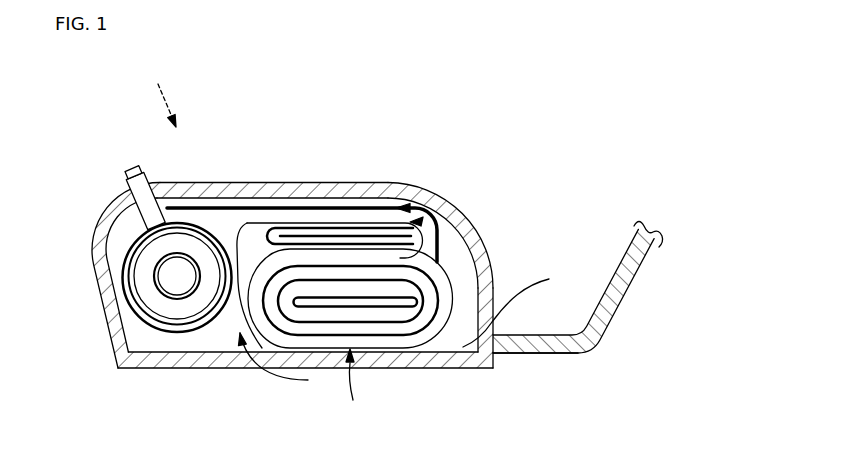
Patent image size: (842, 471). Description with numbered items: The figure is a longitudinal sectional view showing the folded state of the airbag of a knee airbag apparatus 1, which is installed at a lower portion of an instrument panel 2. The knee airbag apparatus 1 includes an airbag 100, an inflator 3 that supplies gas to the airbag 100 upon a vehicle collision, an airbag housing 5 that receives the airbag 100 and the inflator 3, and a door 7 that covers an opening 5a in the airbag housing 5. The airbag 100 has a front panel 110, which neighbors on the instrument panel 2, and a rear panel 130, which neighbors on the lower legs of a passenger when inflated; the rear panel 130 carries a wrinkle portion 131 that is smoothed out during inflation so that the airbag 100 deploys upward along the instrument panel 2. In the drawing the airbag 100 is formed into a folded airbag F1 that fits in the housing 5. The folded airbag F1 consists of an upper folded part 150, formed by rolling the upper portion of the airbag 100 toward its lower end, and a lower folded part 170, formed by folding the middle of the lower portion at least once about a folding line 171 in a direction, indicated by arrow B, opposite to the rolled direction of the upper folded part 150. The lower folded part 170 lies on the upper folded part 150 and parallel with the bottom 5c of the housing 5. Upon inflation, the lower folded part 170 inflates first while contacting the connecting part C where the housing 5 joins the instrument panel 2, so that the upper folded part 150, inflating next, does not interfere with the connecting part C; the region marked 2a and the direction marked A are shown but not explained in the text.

The knee airbag apparatus 1 is at (148, 81).
The instrument panel 2 is at (640, 281).
The bracket horizontal portion 2a is at (545, 343).
The inflator 3 is at (142, 275).
The airbag housing 5 is at (93, 247).
The opening 5a is at (467, 355).
The bottom 5c is at (292, 182).
The door 7 is at (160, 362).
The airbag 100 is at (373, 287).
The front panel 110 is at (224, 206).
The rear panel 130 is at (203, 332).
The wrinkle portion 131 is at (360, 235).
The upper folded part 150 is at (438, 362).
The lower folded part 170 is at (423, 183).
The folding line 171 is at (450, 203).
The flow direction A is at (274, 367).
The arrow B is at (423, 232).
The connecting part C is at (511, 303).
The folded airbag F1 is at (345, 436).